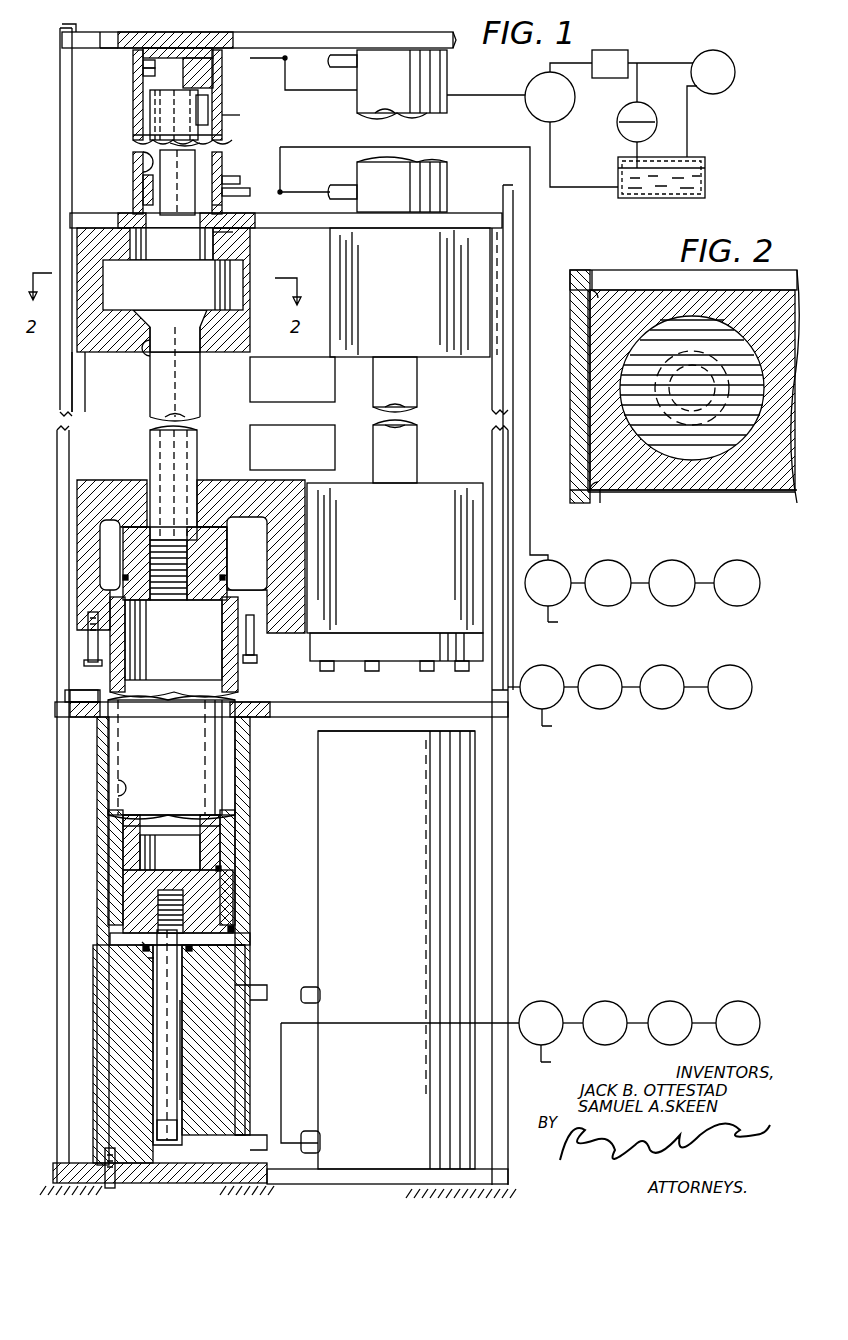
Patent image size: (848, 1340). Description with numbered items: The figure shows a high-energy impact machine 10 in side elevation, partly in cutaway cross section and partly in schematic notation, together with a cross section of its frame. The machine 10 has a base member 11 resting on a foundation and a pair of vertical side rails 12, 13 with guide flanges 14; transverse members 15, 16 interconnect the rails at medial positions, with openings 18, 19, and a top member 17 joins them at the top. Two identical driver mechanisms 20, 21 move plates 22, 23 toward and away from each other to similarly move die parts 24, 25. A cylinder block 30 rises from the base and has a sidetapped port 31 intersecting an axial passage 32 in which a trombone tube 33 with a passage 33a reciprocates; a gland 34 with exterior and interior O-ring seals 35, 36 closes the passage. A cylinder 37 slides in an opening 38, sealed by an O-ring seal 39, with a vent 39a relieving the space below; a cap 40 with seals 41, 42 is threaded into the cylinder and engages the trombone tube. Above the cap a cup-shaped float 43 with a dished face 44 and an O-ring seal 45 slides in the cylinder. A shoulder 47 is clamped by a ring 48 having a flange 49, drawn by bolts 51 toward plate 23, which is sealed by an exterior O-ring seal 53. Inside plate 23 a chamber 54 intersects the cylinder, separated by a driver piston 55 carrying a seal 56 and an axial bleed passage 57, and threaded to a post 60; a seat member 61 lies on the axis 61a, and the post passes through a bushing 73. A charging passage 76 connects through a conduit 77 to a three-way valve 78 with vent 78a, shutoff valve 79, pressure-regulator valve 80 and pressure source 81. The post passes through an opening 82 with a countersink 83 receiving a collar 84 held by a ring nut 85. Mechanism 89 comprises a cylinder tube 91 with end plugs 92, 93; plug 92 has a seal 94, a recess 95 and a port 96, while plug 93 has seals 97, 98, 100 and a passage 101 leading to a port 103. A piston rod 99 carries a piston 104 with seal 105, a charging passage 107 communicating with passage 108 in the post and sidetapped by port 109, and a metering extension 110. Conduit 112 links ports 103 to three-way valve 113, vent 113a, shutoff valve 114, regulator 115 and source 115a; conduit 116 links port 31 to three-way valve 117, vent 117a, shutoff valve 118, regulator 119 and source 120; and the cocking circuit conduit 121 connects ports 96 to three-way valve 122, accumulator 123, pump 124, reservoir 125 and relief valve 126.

In FIG. 1, the machine 10 is at (535, 848).
In FIG. 1, the base member 11 is at (490, 1168).
In FIG. 1, the vertical side rail 12 is at (58, 400).
In FIG. 2, the vertical side rail 12 is at (570, 308).
In FIG. 1, the vertical side rail 13 is at (510, 905).
In FIG. 2, the guide flange 14 is at (598, 290).
In FIG. 1, the transverse member 15 is at (302, 720).
In FIG. 1, the transverse member 16 is at (460, 212).
In FIG. 1, the top member 17 is at (366, 40).
In FIG. 1, the opening 18 is at (106, 710).
In FIG. 1, the opening 19 is at (238, 257).
In FIG. 1, the driver mechanism 20 is at (252, 786).
In FIG. 1, the driver mechanism 21 is at (475, 782).
In FIG. 1, the plate 22 is at (406, 296).
In FIG. 2, the plate 22 is at (696, 496).
In FIG. 1, the plate 23 is at (441, 562).
In FIG. 1, the die part 24 is at (301, 400).
In FIG. 1, the die part 25 is at (311, 452).
In FIG. 1, the cylinder block 30 is at (97, 810).
In FIG. 1, the sidetapped port 31 is at (248, 1135).
In FIG. 1, the axial passage 32 is at (180, 1085).
In FIG. 1, the trombone tube 33 is at (172, 1048).
In FIG. 1, the passage 33a is at (160, 1125).
In FIG. 1, the gland 34 is at (200, 947).
In FIG. 1, the exterior O-ring seal 35 is at (188, 953).
In FIG. 1, the interior O-ring seal 36 is at (145, 950).
In FIG. 1, the cylinder 37 is at (166, 765).
In FIG. 1, the opening 38 is at (115, 784).
In FIG. 1, the O-ring seal 39 is at (110, 935).
In FIG. 1, the vent 39a is at (262, 990).
In FIG. 1, the cap 40 is at (222, 915).
In FIG. 1, the exterior O-ring seal 41 is at (222, 900).
In FIG. 1, the interior O-ring seal 42 is at (234, 930).
In FIG. 1, the cup-shaped float 43 is at (227, 850).
In FIG. 1, the dished face 44 is at (218, 830).
In FIG. 1, the O-ring seal 45 is at (221, 872).
In FIG. 1, the shoulder 47 is at (84, 660).
In FIG. 1, the ring 48 is at (88, 634).
In FIG. 1, the flange 49 is at (100, 690).
In FIG. 1, the bolt 51 is at (258, 668).
In FIG. 1, the exterior O-ring seal 53 is at (110, 603).
In FIG. 1, the chamber 54 is at (261, 547).
In FIG. 1, the driver piston 55 is at (120, 543).
In FIG. 1, the exterior O-ring seal 56 is at (122, 578).
In FIG. 1, the axial bleed passage 57 is at (150, 568).
In FIG. 1, the post 60 is at (200, 392).
In FIG. 1, the seat member 61 is at (110, 522).
In FIG. 1, the axis 61a is at (145, 1171).
In FIG. 1, the bushing 73 is at (146, 488).
In FIG. 1, the charging passage 76 is at (303, 560).
In FIG. 1, the conduit 77 is at (512, 686).
In FIG. 1, the three-way valve 78 is at (552, 670).
In FIG. 1, the vent 78a is at (544, 718).
In FIG. 1, the shutoff valve 79 is at (612, 668).
In FIG. 1, the pressure-regulator valve 80 is at (662, 709).
In FIG. 1, the pump, compressor, or pressure tank 81 is at (736, 667).
In FIG. 1, the opening 82 is at (146, 366).
In FIG. 1, the countersink 83 is at (110, 295).
In FIG. 1, the collar 84 is at (103, 268).
In FIG. 2, the collar 84 is at (723, 452).
In FIG. 1, the ring nut 85 is at (235, 236).
In FIG. 1, the mechanism 89 is at (118, 122).
In FIG. 1, the cylinder tube 91 is at (133, 135).
In FIG. 1, the end plug 92 is at (118, 50).
In FIG. 1, the end plug 93 is at (226, 206).
In FIG. 1, the exterior O-ring seal 94 is at (143, 62).
In FIG. 1, the dished-out recess 95 is at (143, 72).
In FIG. 1, the threaded sidetapped port 96 is at (242, 58).
In FIG. 1, the O-ring seal 97 is at (133, 200).
In FIG. 1, the interior seal 98 is at (143, 196).
In FIG. 1, the piston rod 99 is at (222, 113).
In FIG. 1, the exterior seal 100 is at (226, 176).
In FIG. 1, the passage 101 is at (143, 159).
In FIG. 1, the threaded sidetapped port 103 is at (236, 190).
In FIG. 1, the piston 104 is at (150, 98).
In FIG. 1, the O-ring seal 105 is at (195, 26).
In FIG. 1, the charging passage 107 is at (205, 142).
In FIG. 1, the charging passage 108 is at (180, 462).
In FIG. 1, the port 109 is at (208, 105).
In FIG. 1, the metering extension 110 is at (194, 60).
In FIG. 1, the conduit 112 is at (344, 146).
In FIG. 1, the three-way valve 113 is at (540, 604).
In FIG. 1, the vent 113a is at (556, 618).
In FIG. 1, the shutoff valve 114 is at (618, 603).
In FIG. 1, the pressure regulator 115 is at (680, 562).
In FIG. 1, the pump, compressor, or compressed gas bottle 115a is at (752, 600).
In FIG. 1, the conduit 116 is at (283, 1080).
In FIG. 1, the three-way valve 117 is at (556, 1006).
In FIG. 1, the vent 117a is at (546, 1054).
In FIG. 1, the shutoff valve 118 is at (620, 1006).
In FIG. 1, the pressure regulator 119 is at (684, 1006).
In FIG. 1, the pump, compressor, or compressed gas bottle 120 is at (750, 1008).
In FIG. 1, the conduit 121 is at (462, 93).
In FIG. 1, the three-way valve 122 is at (524, 106).
In FIG. 1, the pressure accumulator 123 is at (618, 52).
In FIG. 1, the pump 124 is at (735, 64).
In FIG. 1, the reservoir 125 is at (705, 180).
In FIG. 1, the pressure relief valve 126 is at (622, 136).